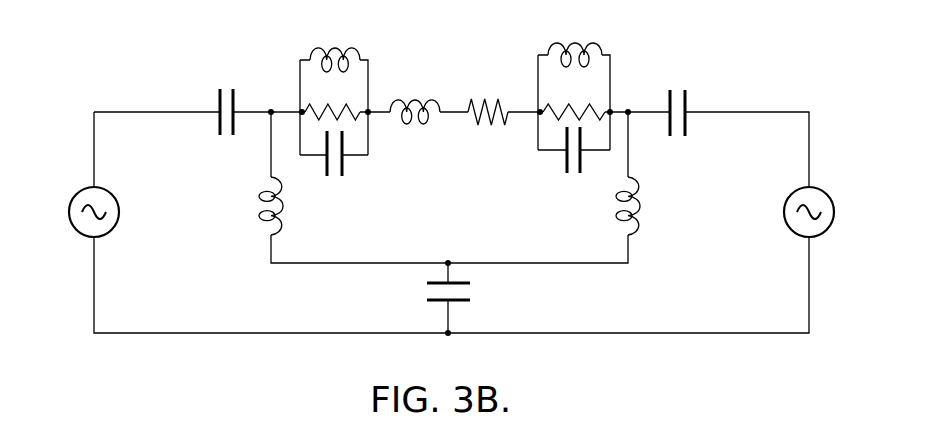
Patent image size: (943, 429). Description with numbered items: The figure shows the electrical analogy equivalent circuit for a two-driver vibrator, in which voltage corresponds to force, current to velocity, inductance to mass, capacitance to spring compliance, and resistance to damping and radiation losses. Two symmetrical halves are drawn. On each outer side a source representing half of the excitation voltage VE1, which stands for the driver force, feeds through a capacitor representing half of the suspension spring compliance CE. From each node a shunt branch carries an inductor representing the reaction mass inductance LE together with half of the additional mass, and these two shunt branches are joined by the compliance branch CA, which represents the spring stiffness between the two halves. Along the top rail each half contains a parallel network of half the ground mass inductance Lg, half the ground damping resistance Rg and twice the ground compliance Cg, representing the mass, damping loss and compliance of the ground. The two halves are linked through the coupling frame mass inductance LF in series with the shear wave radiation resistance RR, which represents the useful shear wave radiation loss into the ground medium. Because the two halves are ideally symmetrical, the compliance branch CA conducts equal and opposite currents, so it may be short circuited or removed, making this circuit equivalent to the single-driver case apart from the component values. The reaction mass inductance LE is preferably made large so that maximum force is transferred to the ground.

The suspension spring compliance CE is at (455, 105).
The force driver excitation voltage VE1 is at (56, 243).
The ground mass inductance Lg is at (455, 84).
The ground damping resistance Rg is at (455, 98).
The ground compliance Cg is at (455, 155).
The coupling frame mass inductance LF is at (415, 99).
The shear wave radiation resistance RR is at (488, 99).
The reaction mass inductance LE is at (501, 206).
The compliance branch CA is at (466, 298).